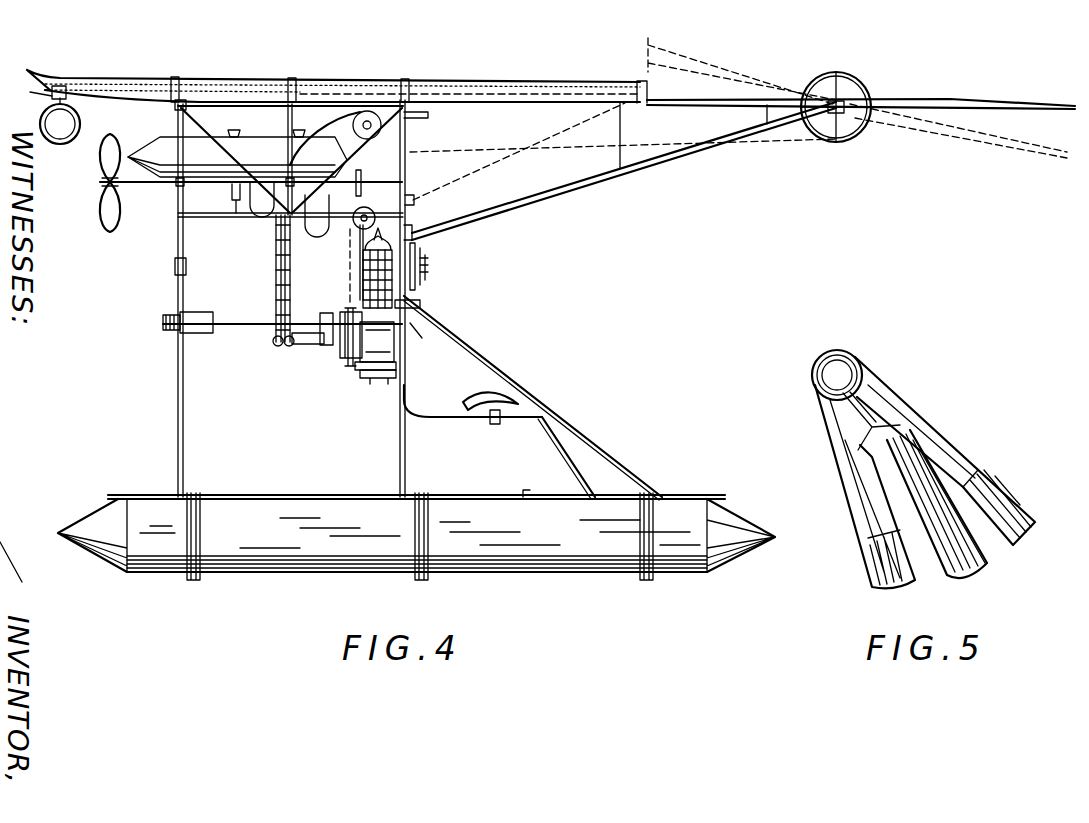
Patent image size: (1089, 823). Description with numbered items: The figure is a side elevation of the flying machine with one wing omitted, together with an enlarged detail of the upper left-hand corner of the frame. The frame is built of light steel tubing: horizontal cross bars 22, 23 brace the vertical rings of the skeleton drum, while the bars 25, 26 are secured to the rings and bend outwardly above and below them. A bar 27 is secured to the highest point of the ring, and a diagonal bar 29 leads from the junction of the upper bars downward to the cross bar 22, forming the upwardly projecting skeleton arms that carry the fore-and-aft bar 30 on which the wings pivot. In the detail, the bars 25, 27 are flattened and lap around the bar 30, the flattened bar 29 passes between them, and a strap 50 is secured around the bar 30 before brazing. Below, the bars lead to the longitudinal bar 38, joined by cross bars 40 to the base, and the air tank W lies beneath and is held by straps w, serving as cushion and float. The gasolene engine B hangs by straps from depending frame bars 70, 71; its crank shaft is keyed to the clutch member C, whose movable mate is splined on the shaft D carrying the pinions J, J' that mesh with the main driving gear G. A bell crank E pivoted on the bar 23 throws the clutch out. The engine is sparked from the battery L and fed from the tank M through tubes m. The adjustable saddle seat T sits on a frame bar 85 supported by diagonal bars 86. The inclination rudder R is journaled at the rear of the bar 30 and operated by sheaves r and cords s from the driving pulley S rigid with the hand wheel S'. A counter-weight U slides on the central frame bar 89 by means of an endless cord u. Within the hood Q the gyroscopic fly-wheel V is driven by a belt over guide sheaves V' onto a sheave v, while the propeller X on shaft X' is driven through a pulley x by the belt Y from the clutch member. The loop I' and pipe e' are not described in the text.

In FIG. 4, the fore-and-aft bar 30 is at (240, 102).
In FIG. 5, the fore-and-aft bar 30 is at (850, 362).
In FIG. 4, the roof portion (hood) Q is at (470, 90).
In FIG. 4, the fly-wheel V is at (348, 72).
In FIG. 4, the counter-weight U is at (82, 124).
In FIG. 4, the longitudinal central frame bar 89 is at (44, 96).
In FIG. 4, the propeller X is at (94, 183).
In FIG. 4, the propeller shaft X' is at (251, 197).
In FIG. 4, the bar 25 is at (181, 414).
In FIG. 5, the bar 25 is at (882, 577).
In FIG. 4, the bar 26 is at (406, 381).
In FIG. 4, the horizontal cross bar 22 is at (213, 219).
In FIG. 4, the tank M is at (237, 153).
In FIG. 4, the diagonal bar 29 is at (362, 162).
In FIG. 5, the diagonal bar 29 is at (967, 558).
In FIG. 4, the guide sheave V' is at (335, 135).
In FIG. 4, the sheave v is at (414, 112).
In FIG. 4, the pulley x is at (362, 182).
In FIG. 4, the belt Y is at (370, 208).
In FIG. 4, the loop I' is at (292, 209).
In FIG. 4, the main driving gear G is at (292, 250).
In FIG. 4, the horizontal cross bar 23 is at (245, 325).
In FIG. 4, the battery L is at (198, 313).
In FIG. 4, the pinion J' is at (255, 358).
In FIG. 4, the pinion J is at (281, 360).
In FIG. 4, the shaft D is at (320, 345).
In FIG. 4, the tube m is at (362, 262).
In FIG. 4, the pipe e' is at (341, 327).
In FIG. 4, the engine B is at (380, 364).
In FIG. 4, the clutch member C is at (342, 352).
In FIG. 4, the depending frame bar 70 is at (396, 348).
In FIG. 4, the depending frame bar 71 is at (366, 364).
In FIG. 4, the driving pulley S is at (429, 266).
In FIG. 4, the hand wheel S' is at (422, 217).
In FIG. 4, the endless cord u is at (462, 166).
In FIG. 4, the cord s is at (663, 148).
In FIG. 4, the inclination rudder R is at (950, 102).
In FIG. 4, the sheave r is at (858, 92).
In FIG. 4, the bell crank E is at (425, 323).
In FIG. 4, the frame bar 85 is at (430, 411).
In FIG. 4, the seat T is at (476, 402).
In FIG. 4, the diagonal bar 86 is at (556, 450).
In FIG. 4, the cross bar 40 is at (528, 497).
In FIG. 4, the longitudinal bar 38 is at (312, 497).
In FIG. 4, the air tank W is at (590, 560).
In FIG. 4, the strap w is at (430, 527).
In FIG. 5, the strap 50 is at (910, 414).
In FIG. 5, the bar 27 is at (1007, 493).